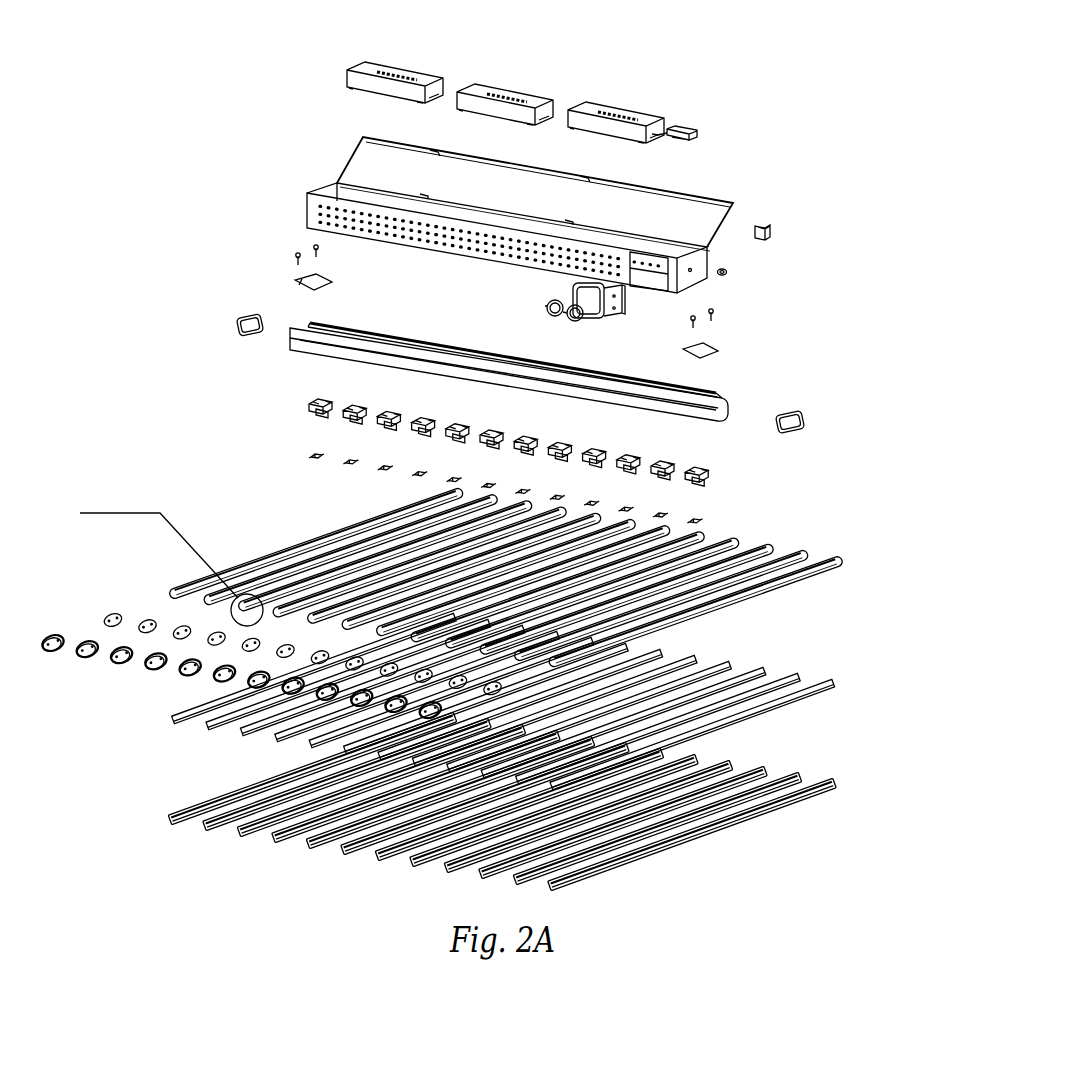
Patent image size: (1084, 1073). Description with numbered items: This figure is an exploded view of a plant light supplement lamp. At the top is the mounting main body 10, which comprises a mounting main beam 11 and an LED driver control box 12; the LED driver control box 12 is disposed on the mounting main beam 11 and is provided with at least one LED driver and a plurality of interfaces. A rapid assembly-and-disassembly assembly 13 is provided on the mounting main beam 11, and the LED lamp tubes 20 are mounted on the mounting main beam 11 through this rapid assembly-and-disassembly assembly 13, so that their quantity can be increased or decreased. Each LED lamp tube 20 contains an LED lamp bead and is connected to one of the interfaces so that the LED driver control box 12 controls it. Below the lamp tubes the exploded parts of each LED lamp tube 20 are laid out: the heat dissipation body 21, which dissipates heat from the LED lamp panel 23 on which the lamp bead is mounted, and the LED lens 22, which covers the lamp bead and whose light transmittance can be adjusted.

The mounting main body 10 is at (780, 340).
The mounting main beam 11 is at (290, 330).
The LED driver control box 12 is at (320, 186).
The rapid assembly-and-disassembly assembly 13 is at (713, 473).
The LED lamp tube 20 is at (232, 538).
The heat dissipation body 21 is at (842, 555).
The LED lens 22 is at (840, 773).
The LED lamp panel 23 is at (832, 682).